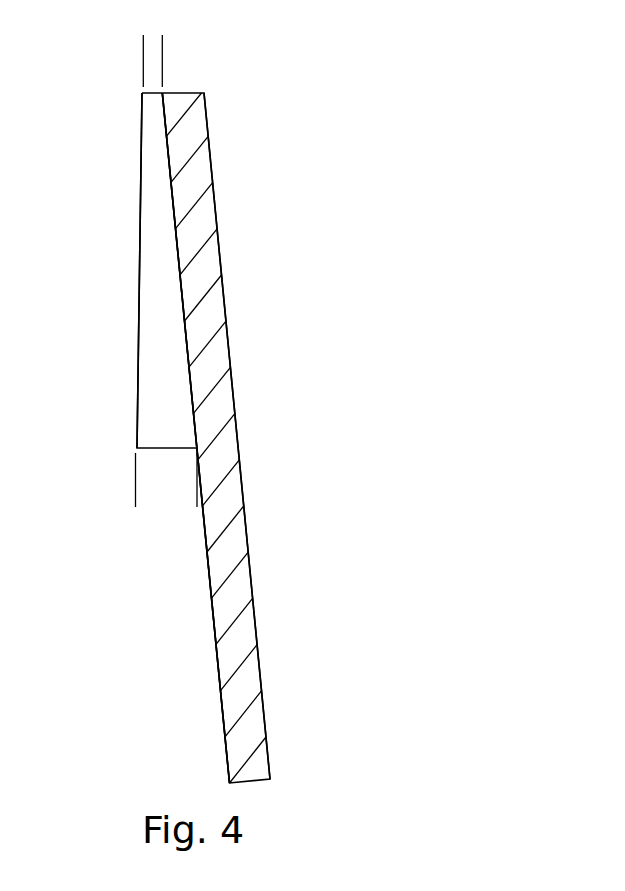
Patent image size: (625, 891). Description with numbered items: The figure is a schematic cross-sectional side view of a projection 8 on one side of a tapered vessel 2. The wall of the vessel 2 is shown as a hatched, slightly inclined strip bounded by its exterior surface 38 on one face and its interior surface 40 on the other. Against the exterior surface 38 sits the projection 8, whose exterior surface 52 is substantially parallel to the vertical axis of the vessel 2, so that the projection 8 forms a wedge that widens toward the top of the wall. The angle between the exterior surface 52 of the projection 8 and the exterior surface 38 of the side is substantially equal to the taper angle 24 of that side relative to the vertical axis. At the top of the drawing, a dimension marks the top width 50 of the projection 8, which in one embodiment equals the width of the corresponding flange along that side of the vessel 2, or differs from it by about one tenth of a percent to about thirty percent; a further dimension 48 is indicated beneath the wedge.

The vessel 2 is at (246, 112).
The projection 8 is at (130, 225).
The taper angle 24 is at (178, 361).
The exterior surface of the side 38 is at (209, 683).
The interior surface 40 is at (269, 666).
The width 48 is at (187, 493).
The top width of the projection 50 is at (205, 52).
The exterior surface of the projection 52 is at (138, 303).